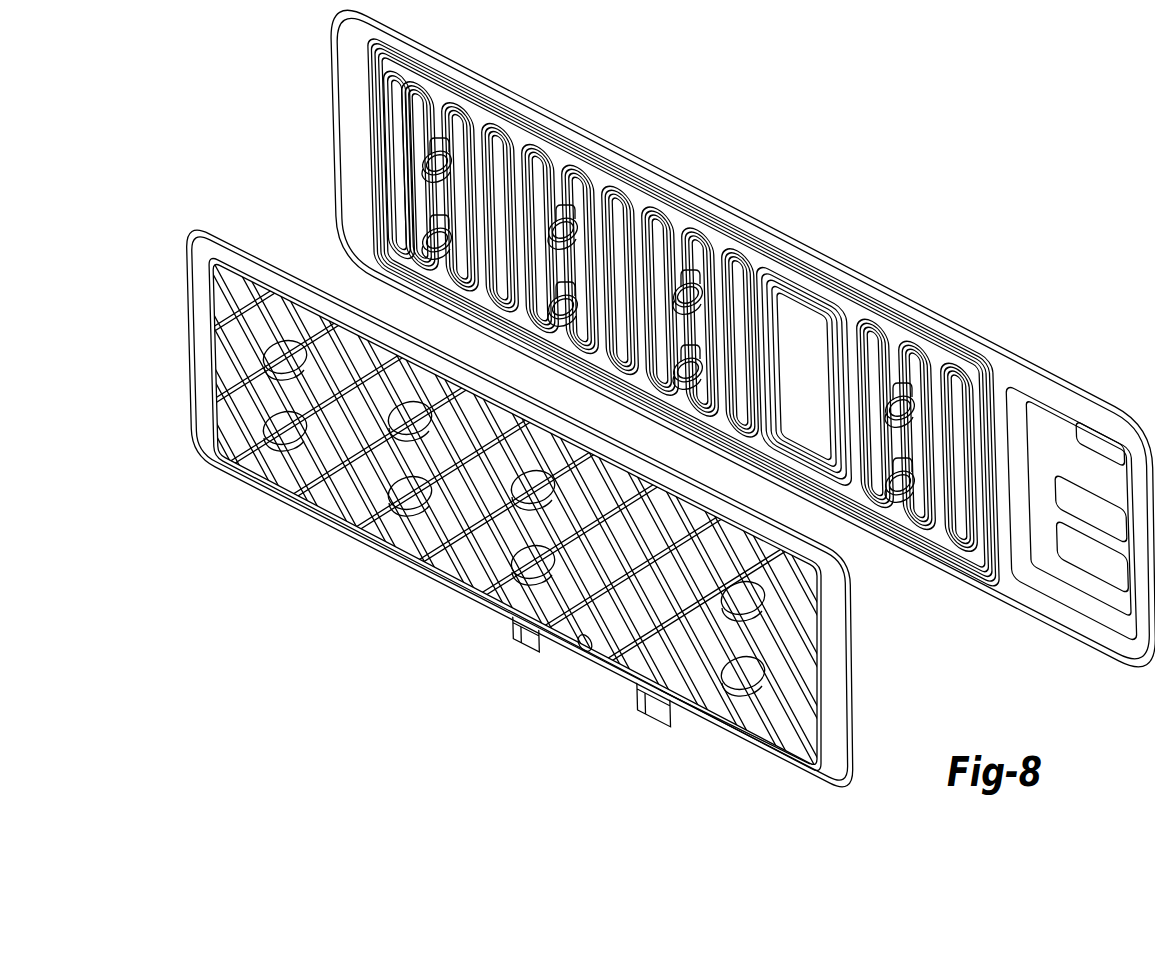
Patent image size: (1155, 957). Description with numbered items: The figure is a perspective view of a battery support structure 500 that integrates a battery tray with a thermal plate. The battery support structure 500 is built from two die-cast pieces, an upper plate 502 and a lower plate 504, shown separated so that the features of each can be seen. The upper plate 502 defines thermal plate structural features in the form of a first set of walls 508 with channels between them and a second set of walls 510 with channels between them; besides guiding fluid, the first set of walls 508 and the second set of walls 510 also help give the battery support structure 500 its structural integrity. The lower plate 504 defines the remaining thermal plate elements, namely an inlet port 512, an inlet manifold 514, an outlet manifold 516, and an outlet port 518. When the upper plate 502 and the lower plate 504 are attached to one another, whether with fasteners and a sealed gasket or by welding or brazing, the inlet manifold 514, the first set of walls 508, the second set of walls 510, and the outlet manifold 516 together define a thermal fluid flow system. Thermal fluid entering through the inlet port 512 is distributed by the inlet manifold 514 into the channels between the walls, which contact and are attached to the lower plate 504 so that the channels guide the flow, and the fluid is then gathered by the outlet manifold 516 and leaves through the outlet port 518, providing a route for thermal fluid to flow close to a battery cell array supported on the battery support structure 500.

The battery support structure 500 is at (288, 72).
The upper plate 502 is at (743, 338).
The lower plate 504 is at (518, 460).
The first set of walls 508 is at (588, 166).
The second set of walls 510 is at (881, 316).
The inlet port 512 is at (513, 633).
The inlet manifold 514 is at (398, 547).
The outlet manifold 516 is at (737, 719).
The outlet port 518 is at (640, 712).